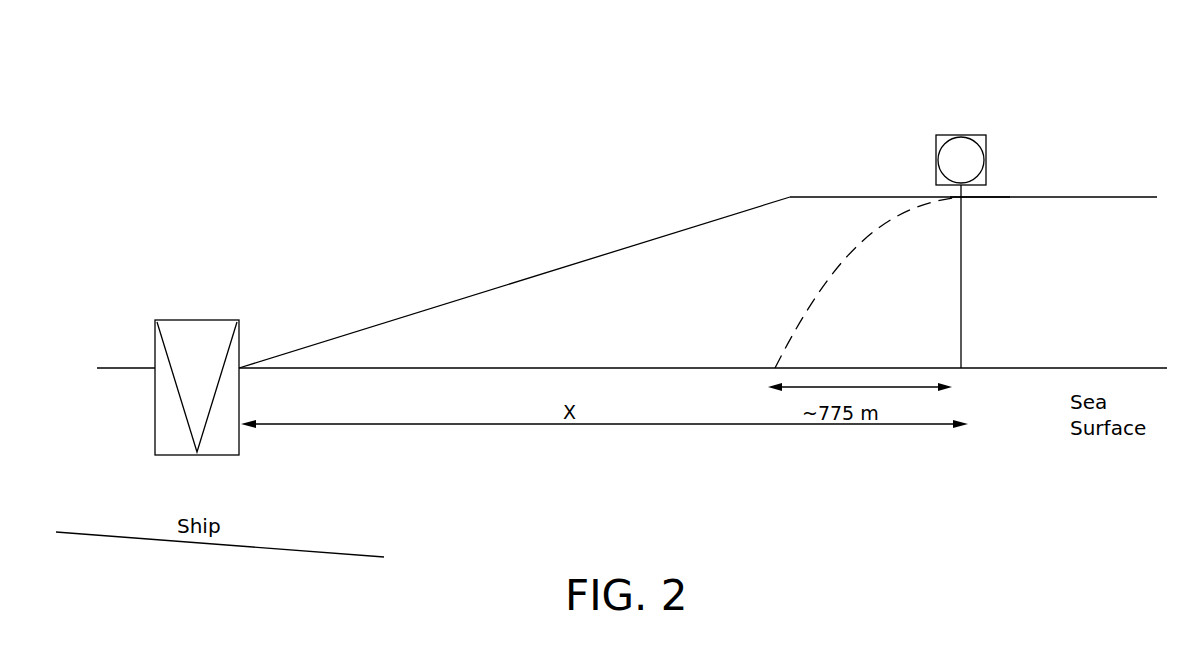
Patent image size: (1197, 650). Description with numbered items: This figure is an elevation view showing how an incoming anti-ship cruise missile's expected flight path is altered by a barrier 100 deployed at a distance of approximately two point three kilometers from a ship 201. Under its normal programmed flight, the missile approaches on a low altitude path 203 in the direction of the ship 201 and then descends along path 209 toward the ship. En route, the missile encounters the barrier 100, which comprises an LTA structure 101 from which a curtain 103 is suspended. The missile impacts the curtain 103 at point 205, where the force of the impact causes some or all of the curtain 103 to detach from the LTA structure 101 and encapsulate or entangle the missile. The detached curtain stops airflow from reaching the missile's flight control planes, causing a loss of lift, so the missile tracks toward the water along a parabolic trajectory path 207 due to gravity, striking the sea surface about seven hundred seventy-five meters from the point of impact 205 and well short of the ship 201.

The barrier 100 is at (966, 80).
The LTA structure 101 is at (947, 168).
The curtain 103 is at (958, 323).
The ship 201 is at (197, 320).
The low altitude path 203 is at (1097, 197).
The point of impact 205 is at (965, 197).
The parabolic trajectory path 207 is at (807, 312).
The descent path 209 is at (590, 258).